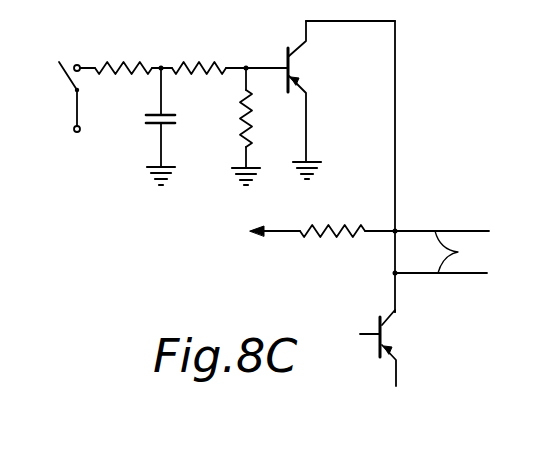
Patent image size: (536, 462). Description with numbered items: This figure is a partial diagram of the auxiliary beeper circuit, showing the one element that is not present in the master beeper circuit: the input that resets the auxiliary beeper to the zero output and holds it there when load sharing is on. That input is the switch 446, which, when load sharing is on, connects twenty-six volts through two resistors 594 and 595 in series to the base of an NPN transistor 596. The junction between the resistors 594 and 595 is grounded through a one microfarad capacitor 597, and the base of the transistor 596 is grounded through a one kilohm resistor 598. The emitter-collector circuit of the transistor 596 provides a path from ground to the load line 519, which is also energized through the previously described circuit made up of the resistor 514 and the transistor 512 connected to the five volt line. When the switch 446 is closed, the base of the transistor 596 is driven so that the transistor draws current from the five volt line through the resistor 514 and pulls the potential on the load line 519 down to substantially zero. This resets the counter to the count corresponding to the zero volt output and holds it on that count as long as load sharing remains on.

The switch 446 is at (67, 86).
The resistor 594 is at (107, 62).
The resistor 595 is at (190, 62).
The NPN transistor 596 is at (297, 67).
The capacitor 597 is at (157, 113).
The resistor 598 is at (242, 107).
The load line 519 is at (395, 173).
The resistor 514 is at (326, 225).
The transistor 512 is at (392, 338).